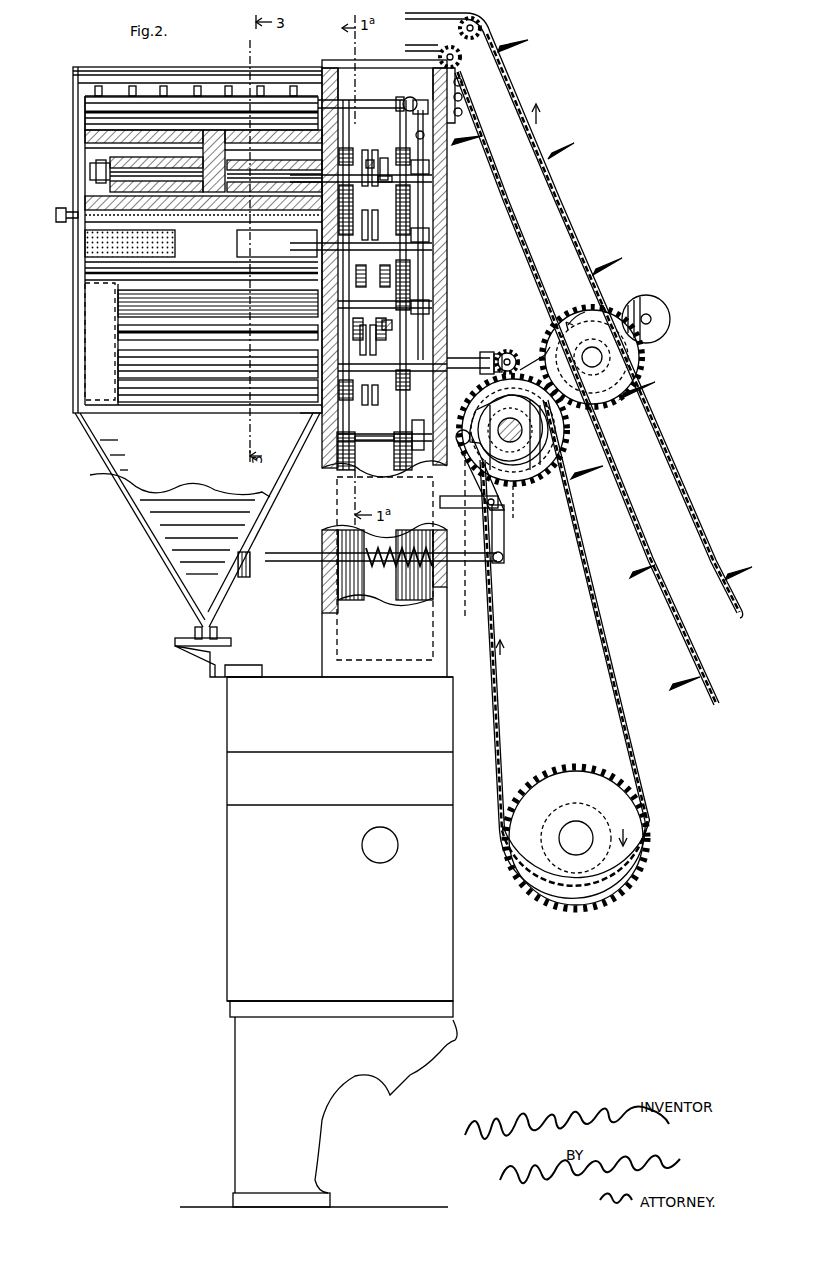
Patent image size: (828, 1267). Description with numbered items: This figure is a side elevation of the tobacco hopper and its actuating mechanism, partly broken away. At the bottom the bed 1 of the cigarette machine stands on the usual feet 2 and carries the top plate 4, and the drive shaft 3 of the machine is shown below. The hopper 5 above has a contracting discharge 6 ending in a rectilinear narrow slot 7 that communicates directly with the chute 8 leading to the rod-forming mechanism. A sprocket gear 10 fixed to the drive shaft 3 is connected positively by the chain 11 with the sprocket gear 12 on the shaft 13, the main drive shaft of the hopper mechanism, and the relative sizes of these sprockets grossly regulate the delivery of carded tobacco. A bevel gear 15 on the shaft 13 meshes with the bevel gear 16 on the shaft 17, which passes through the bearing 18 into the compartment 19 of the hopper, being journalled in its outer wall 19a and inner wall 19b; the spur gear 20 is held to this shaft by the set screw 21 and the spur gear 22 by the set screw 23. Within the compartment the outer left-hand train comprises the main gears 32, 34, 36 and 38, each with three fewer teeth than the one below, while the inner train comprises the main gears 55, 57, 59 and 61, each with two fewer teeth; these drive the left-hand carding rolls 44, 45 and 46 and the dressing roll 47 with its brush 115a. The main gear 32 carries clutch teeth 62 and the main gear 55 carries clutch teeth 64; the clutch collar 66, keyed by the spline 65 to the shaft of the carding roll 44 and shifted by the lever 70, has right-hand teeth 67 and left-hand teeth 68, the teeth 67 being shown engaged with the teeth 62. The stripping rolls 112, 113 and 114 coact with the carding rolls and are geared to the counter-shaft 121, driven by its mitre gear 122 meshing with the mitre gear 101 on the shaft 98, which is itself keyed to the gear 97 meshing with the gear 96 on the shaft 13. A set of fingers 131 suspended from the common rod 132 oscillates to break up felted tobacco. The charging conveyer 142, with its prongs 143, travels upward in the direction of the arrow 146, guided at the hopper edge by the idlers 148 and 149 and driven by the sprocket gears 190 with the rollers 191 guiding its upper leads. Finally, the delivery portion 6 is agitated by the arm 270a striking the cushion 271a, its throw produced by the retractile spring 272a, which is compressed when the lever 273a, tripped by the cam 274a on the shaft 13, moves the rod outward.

The bed 1 is at (240, 888).
The feet 2 is at (240, 1072).
The drive shaft 3 is at (572, 848).
The top plate 4 is at (290, 677).
The hopper 5 is at (174, 74).
The contracting discharge 6 is at (180, 485).
The rectilinear narrow slot 7 is at (198, 628).
The chute 8 is at (190, 652).
The sprocket gear 10 is at (630, 853).
The chain 11 is at (615, 688).
The sprocket gear 12 is at (550, 480).
The shaft 13 is at (532, 470).
The bevel gear 15 is at (512, 490).
The bevel gear 16 is at (513, 425).
The shaft 17 is at (372, 470).
The bearing 18 is at (420, 452).
The compartment 19 is at (372, 80).
The outer wall 19a is at (447, 298).
The inner wall 19b is at (328, 72).
The spur gear 20 is at (398, 470).
The set screw 21 is at (397, 451).
The spur gear 22 is at (330, 470).
The set screw 23 is at (353, 453).
The main gear 32 is at (408, 372).
The main gear 34 is at (410, 284).
The main gear 36 is at (408, 215).
The main gear 38 is at (412, 148).
The carding roll 44 is at (148, 398).
The carding roll 45 is at (118, 335).
The carding roll 46 is at (85, 276).
The dressing roll 47 is at (85, 136).
The main gear 55 is at (318, 413).
The main gear 57 is at (318, 284).
The main gear 59 is at (353, 195).
The main gear 61 is at (346, 148).
The clutch teeth 62 is at (402, 148).
The clutch teeth 64 is at (348, 372).
The spline 65 is at (354, 340).
The clutch collar 66 is at (365, 150).
The clutch teeth 67 is at (380, 158).
The clutch teeth 68 is at (384, 340).
The lever 70 is at (360, 280).
The gear 96 is at (560, 450).
The gear 97 is at (528, 350).
The shaft 98 is at (510, 352).
The mitre gear 101 is at (583, 356).
The stripping roll 112 is at (184, 395).
The stripping roll 113 is at (118, 300).
The stripping roll 114 is at (85, 243).
The brush 115a is at (85, 112).
The counter-shaft 121 is at (430, 240).
The mitre gear 122 is at (496, 354).
The fingers 131 is at (162, 86).
The common rod 132 is at (216, 82).
The conveyer chain 142 is at (515, 88).
The teeth or prongs 143 is at (596, 268).
The arrow 146 is at (540, 109).
The sprocket gear or idler 148 is at (482, 30).
The sprocket gear or idler 149 is at (463, 72).
The sprocket gears 190 is at (592, 357).
The rollers 191 is at (652, 315).
The arm 270a is at (310, 553).
The cushion 271a is at (246, 578).
The retractile spring 272a is at (396, 580).
The lever 273a is at (500, 538).
The cam 274a is at (535, 418).